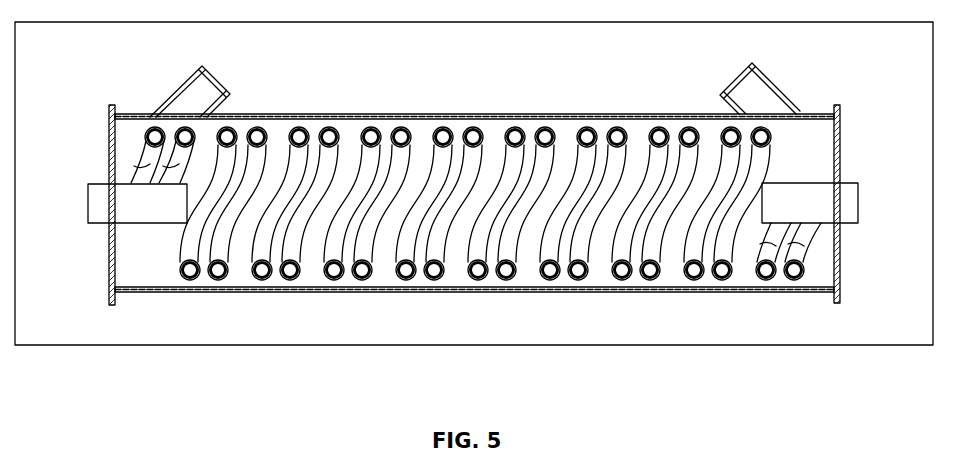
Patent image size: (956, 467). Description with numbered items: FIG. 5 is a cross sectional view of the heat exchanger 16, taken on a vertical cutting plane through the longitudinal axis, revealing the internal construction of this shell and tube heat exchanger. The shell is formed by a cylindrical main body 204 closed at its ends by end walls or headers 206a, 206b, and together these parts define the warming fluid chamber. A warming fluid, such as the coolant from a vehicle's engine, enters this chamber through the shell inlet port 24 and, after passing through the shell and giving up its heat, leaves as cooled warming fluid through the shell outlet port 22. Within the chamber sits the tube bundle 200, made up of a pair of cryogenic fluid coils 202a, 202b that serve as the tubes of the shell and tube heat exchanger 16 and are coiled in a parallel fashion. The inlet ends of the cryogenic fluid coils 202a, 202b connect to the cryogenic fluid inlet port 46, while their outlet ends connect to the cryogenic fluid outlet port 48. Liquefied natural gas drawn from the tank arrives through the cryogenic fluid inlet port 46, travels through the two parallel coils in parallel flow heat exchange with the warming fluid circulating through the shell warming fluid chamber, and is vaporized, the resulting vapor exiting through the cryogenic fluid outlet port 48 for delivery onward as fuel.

The heat exchanger 16 is at (195, 313).
The tube bundle 200 is at (462, 95).
The cryogenic fluid coil 202a is at (138, 168).
The cryogenic fluid coil 202b is at (187, 170).
The cylindrical main body 204 is at (377, 293).
The header 206a is at (110, 283).
The header 206b is at (838, 278).
The shell outlet port 22 is at (178, 86).
The shell inlet port 24 is at (773, 84).
The cryogenic fluid inlet port 46 is at (848, 207).
The cryogenic fluid outlet port 48 is at (98, 208).